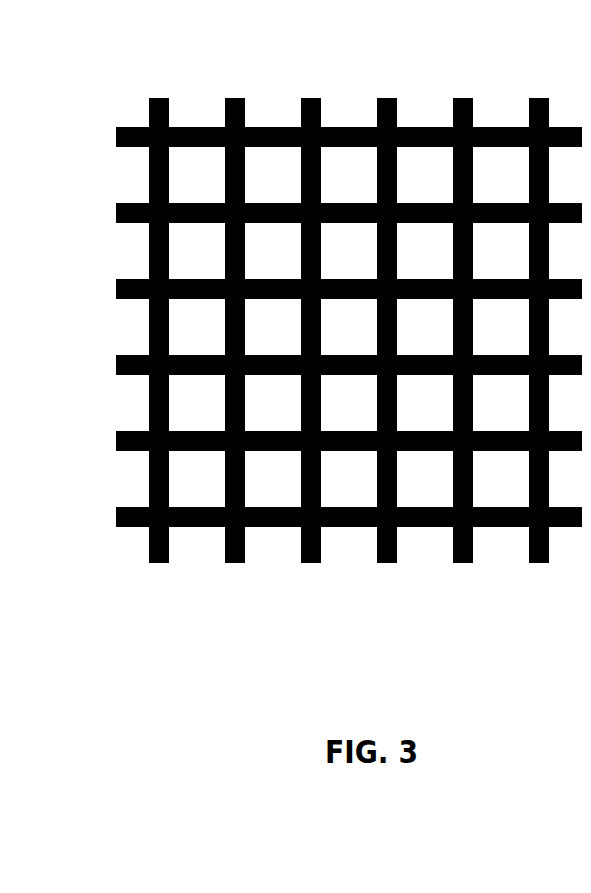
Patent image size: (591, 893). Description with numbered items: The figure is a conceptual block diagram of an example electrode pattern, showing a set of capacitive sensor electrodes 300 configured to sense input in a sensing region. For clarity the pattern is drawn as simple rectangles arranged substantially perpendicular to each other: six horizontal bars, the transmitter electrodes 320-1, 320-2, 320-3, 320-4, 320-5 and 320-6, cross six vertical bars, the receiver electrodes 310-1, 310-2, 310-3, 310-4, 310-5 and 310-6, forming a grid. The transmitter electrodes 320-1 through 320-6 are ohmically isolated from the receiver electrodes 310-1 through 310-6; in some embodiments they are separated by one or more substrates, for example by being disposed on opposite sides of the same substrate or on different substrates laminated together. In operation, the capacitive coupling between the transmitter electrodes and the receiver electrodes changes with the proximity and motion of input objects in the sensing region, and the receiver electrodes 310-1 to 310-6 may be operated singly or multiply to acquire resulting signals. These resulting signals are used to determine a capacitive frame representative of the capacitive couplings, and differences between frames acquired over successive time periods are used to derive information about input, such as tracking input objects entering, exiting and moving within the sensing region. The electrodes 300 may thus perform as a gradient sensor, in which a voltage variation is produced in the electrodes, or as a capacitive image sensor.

The capacitive sensor electrodes 300 is at (135, 50).
The transmitter electrode 320-1 is at (116, 143).
The transmitter electrode 320-2 is at (116, 219).
The transmitter electrode 320-3 is at (116, 295).
The transmitter electrode 320-4 is at (116, 371).
The transmitter electrode 320-5 is at (116, 447).
The transmitter electrode 320-6 is at (116, 523).
The receiver electrode 310-1 is at (159, 563).
The receiver electrode 310-2 is at (235, 563).
The receiver electrode 310-3 is at (311, 563).
The receiver electrode 310-4 is at (387, 563).
The receiver electrode 310-5 is at (463, 563).
The receiver electrode 310-6 is at (539, 563).